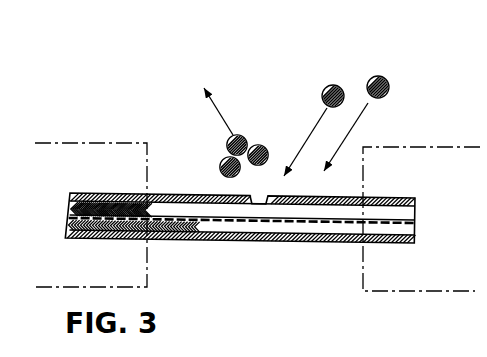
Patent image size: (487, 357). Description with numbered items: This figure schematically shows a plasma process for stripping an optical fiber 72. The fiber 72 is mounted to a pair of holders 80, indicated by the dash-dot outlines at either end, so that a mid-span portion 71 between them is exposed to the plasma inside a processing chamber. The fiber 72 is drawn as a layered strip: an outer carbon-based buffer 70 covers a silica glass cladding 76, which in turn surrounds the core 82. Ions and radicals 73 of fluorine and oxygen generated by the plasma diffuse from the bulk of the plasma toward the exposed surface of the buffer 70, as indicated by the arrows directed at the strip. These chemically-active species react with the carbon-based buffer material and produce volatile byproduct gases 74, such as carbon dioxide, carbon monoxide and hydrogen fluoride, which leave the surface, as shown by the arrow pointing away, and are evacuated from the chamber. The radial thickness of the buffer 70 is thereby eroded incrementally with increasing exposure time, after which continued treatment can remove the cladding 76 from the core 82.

The buffer 70 is at (241, 227).
The mid-span portion 71 is at (258, 243).
The optical fiber 72 is at (389, 245).
The ions and radicals 73 is at (377, 76).
The volatile byproduct gases 74 is at (215, 154).
The cladding 76 is at (388, 218).
The holders 80 is at (101, 143).
The core 82 is at (177, 216).